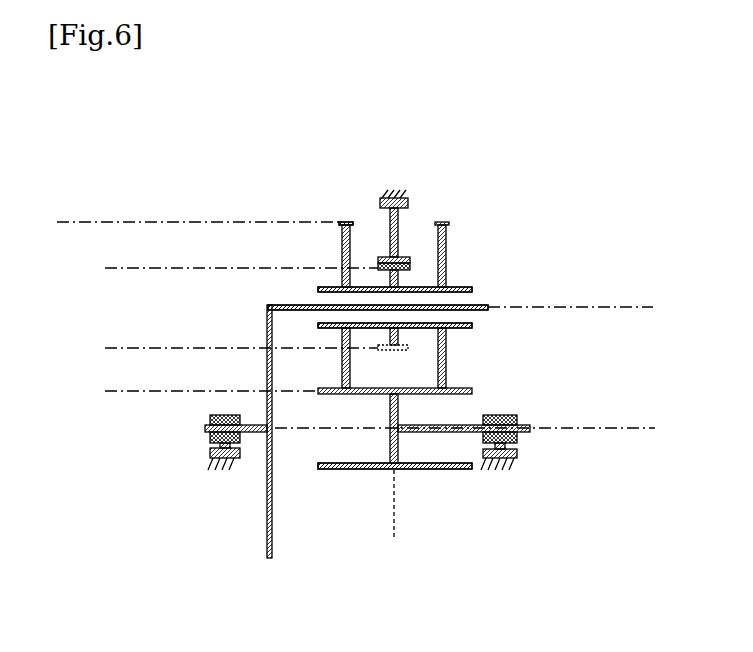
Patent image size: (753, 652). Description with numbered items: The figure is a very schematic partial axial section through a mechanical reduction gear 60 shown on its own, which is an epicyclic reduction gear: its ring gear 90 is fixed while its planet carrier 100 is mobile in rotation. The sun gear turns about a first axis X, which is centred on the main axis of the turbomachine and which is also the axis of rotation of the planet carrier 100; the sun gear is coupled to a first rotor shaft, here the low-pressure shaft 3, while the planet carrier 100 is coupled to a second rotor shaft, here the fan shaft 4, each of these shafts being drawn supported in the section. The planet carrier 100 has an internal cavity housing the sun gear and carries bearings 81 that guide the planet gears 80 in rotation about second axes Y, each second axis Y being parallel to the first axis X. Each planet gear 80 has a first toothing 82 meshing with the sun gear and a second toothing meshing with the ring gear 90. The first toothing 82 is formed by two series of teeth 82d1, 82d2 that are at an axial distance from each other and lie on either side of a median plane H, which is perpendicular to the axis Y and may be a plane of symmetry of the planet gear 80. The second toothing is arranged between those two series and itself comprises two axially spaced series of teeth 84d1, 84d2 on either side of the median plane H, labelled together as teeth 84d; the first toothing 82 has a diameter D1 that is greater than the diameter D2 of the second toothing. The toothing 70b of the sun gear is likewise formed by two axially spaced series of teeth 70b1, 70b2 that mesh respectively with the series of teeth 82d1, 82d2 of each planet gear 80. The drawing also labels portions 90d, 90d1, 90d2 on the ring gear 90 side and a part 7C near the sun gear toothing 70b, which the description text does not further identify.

The low-pressure shaft 3 is at (523, 432).
The fan shaft 4 is at (257, 433).
The carrier 7C is at (437, 477).
The toothing of the sun gear 70b is at (364, 535).
The series of teeth of the sun gear toothing 70b1 is at (395, 466).
The series of teeth of the sun gear toothing 70b2 is at (347, 470).
The mechanical reduction gear 60 is at (555, 246).
The planet gear 80 is at (460, 356).
The bearing 81 is at (313, 305).
The first toothing 82 is at (334, 220).
The series of teeth of the first toothing 82d1 is at (350, 222).
The series of teeth of the first toothing 82d2 is at (447, 222).
The bearing portion 84d is at (504, 194).
The series of teeth of the second toothing 84d1 is at (394, 275).
The series of teeth of the second toothing 84d2 is at (412, 265).
The ring gear 90 is at (388, 245).
The shaft flange portion 90d is at (490, 162).
The shaft flange portion 90d1 is at (394, 260).
The shaft flange portion 90d2 is at (410, 257).
The planet carrier 100 is at (258, 361).
The diameter of the first toothing D1 is at (79, 222).
The diameter of the second toothing D2 is at (127, 268).
The median plane H is at (394, 505).
The first axis X is at (630, 428).
The second axis Y is at (620, 307).